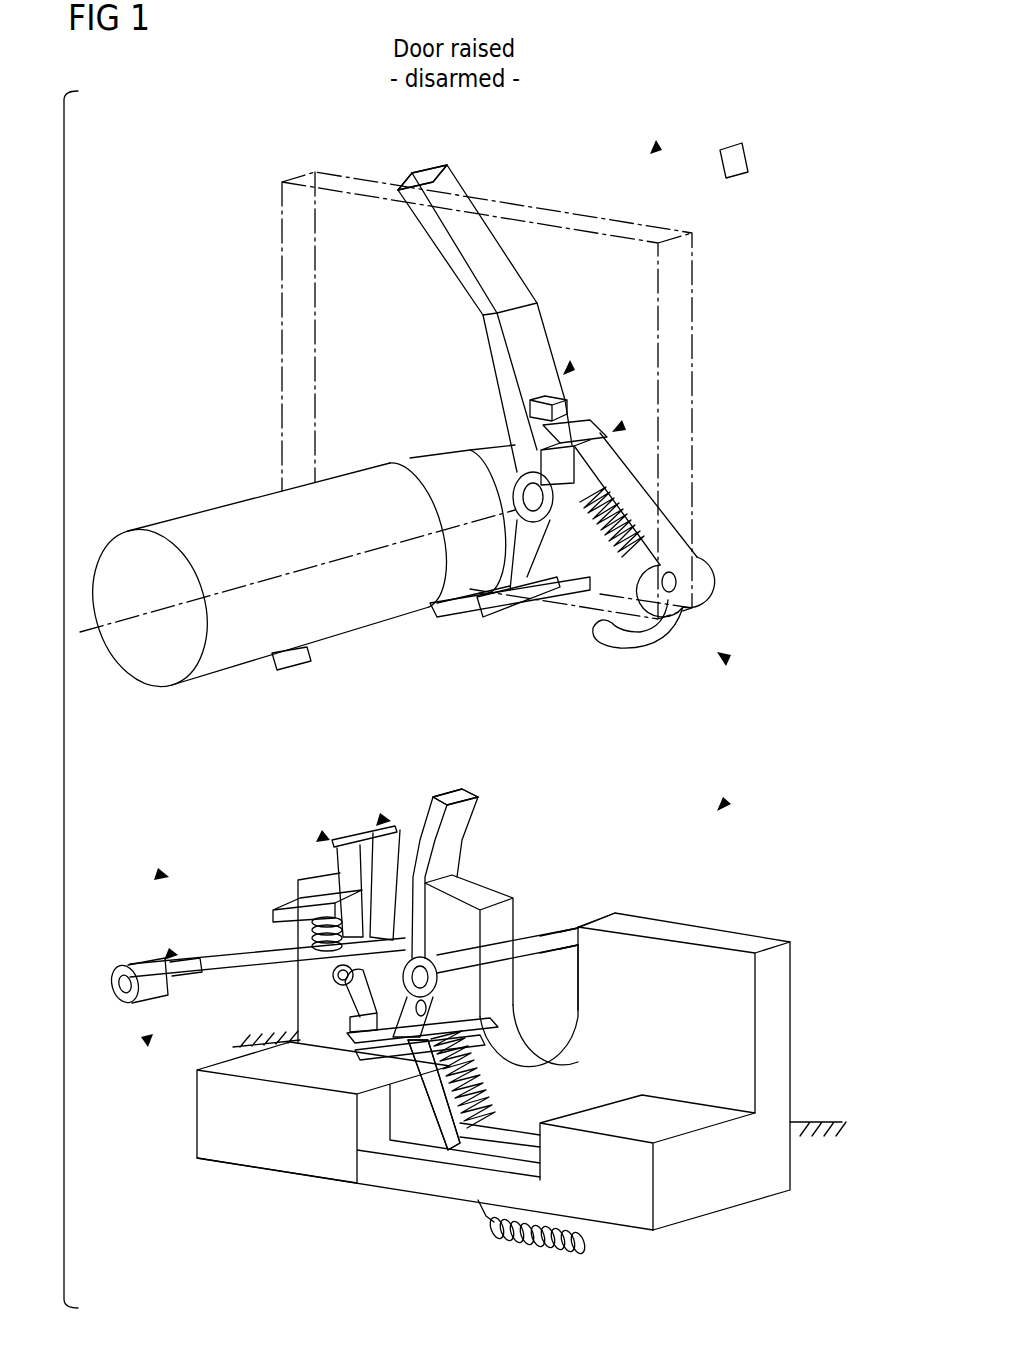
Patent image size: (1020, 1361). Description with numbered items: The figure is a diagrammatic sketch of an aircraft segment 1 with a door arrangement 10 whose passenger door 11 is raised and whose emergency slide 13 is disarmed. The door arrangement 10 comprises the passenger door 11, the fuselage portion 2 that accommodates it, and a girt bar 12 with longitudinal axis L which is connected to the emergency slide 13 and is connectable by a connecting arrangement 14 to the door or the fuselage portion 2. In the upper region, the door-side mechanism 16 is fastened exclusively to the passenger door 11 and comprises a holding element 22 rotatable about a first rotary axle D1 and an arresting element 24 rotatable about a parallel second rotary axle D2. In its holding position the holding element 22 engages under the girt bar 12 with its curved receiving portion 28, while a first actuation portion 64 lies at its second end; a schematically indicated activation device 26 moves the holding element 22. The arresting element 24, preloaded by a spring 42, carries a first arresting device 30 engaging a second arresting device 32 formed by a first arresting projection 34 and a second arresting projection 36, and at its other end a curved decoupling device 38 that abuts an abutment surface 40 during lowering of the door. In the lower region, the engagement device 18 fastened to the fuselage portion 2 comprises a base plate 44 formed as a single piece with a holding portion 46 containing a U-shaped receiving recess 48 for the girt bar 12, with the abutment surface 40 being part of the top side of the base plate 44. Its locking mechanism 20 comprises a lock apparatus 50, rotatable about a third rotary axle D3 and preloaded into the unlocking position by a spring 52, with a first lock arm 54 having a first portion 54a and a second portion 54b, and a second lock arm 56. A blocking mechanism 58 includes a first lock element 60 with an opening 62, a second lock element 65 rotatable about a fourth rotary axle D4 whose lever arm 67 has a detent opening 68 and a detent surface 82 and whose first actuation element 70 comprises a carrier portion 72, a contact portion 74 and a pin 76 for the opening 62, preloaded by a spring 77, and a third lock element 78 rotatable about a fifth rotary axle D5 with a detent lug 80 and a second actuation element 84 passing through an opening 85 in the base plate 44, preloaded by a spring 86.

The aircraft segment 1 is at (657, 147).
The fuselage portion 2 is at (813, 1121).
The door arrangement 10 is at (64, 705).
The passenger door 11 is at (597, 228).
The girt bar 12 is at (209, 522).
The emergency slide 13 is at (293, 662).
The connecting arrangement 14 is at (724, 803).
The mechanism 16 is at (620, 428).
The engagement device 18 is at (792, 1015).
The locking mechanism 20 is at (160, 872).
The holding element 22 is at (481, 240).
The arresting element 24 is at (645, 500).
The activation device 26 is at (735, 157).
The receiving portion 28 is at (468, 608).
The first arresting device 30 is at (578, 420).
The second arresting device 32 is at (570, 368).
The first arresting projection 34 is at (565, 408).
The second arresting projection 36 is at (576, 455).
The decoupling device 38 is at (628, 646).
The abutment surface 40 is at (657, 1128).
The spring 42 is at (614, 562).
The base plate 44 is at (240, 1068).
The holding portion 46 is at (722, 950).
The receiving recess 48 is at (578, 930).
The lock apparatus 50 is at (382, 816).
The spring 52 is at (457, 1113).
The first lock arm 54 is at (462, 792).
The first portion 54a is at (450, 900).
The second portion 54b is at (480, 802).
The second lock arm 56 is at (541, 956).
The blocking mechanism 58 is at (146, 1042).
The first lock element 60 is at (393, 1062).
The opening 62 is at (600, 926).
The first actuation portion 64 is at (432, 170).
The second lock element 65 is at (172, 950).
The lever arm 67 is at (243, 955).
The detent opening 68 is at (313, 958).
The first actuation element 70 is at (333, 842).
The carrier portion 72 is at (337, 862).
The contact portion 74 is at (325, 836).
The pin 76 is at (390, 832).
The spring 77 is at (312, 940).
The third lock element 78 is at (353, 1070).
The detent lug 80 is at (226, 1090).
The detent surface 82 is at (328, 898).
The second actuation element 84 is at (484, 1214).
The opening 85 is at (427, 1133).
The spring 86 is at (522, 1256).
The first rotary axle D1 is at (534, 512).
The second rotary axle D2 is at (690, 583).
The third rotary axle D3 is at (432, 975).
The fourth rotary axle D4 is at (118, 985).
The fifth rotary axle D5 is at (336, 980).
The longitudinal axis L is at (96, 648).